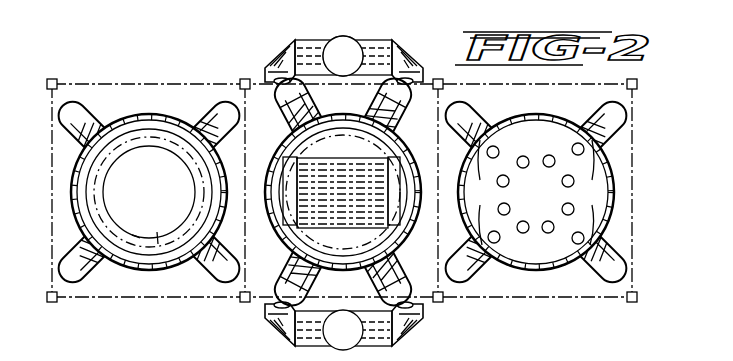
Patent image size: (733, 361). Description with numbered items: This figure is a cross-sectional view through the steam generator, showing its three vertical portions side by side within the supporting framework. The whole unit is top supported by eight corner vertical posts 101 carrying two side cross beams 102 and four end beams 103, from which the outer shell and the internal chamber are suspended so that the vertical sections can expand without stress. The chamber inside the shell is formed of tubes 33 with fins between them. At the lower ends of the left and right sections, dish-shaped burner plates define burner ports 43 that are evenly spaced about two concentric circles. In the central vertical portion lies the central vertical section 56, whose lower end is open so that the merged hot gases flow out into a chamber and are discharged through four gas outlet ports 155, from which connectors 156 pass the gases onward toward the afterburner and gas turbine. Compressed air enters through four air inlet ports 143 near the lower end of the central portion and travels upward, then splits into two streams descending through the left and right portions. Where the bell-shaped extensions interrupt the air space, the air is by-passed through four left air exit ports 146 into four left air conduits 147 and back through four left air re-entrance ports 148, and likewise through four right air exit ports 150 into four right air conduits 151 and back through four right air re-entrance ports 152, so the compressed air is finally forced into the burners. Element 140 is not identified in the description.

The tubes 33 is at (158, 246).
The burner ports 43 is at (573, 233).
The central vertical section 56 is at (332, 168).
The corner vertical posts 101 is at (53, 78).
The side cross beams 102 is at (535, 87).
The end beams 103 is at (52, 222).
The ball 140 is at (340, 36).
The air inlet ports 143 is at (392, 226).
The left air exit ports 146 is at (210, 140).
The left air conduits 147 is at (95, 115).
The left air re-entrance ports 148 is at (134, 218).
The right air exit ports 150 is at (574, 141).
The right air conduits 151 is at (480, 278).
The right air re-entrance ports 152 is at (539, 194).
The gas outlet ports 155 is at (296, 226).
The connectors 156 is at (394, 42).